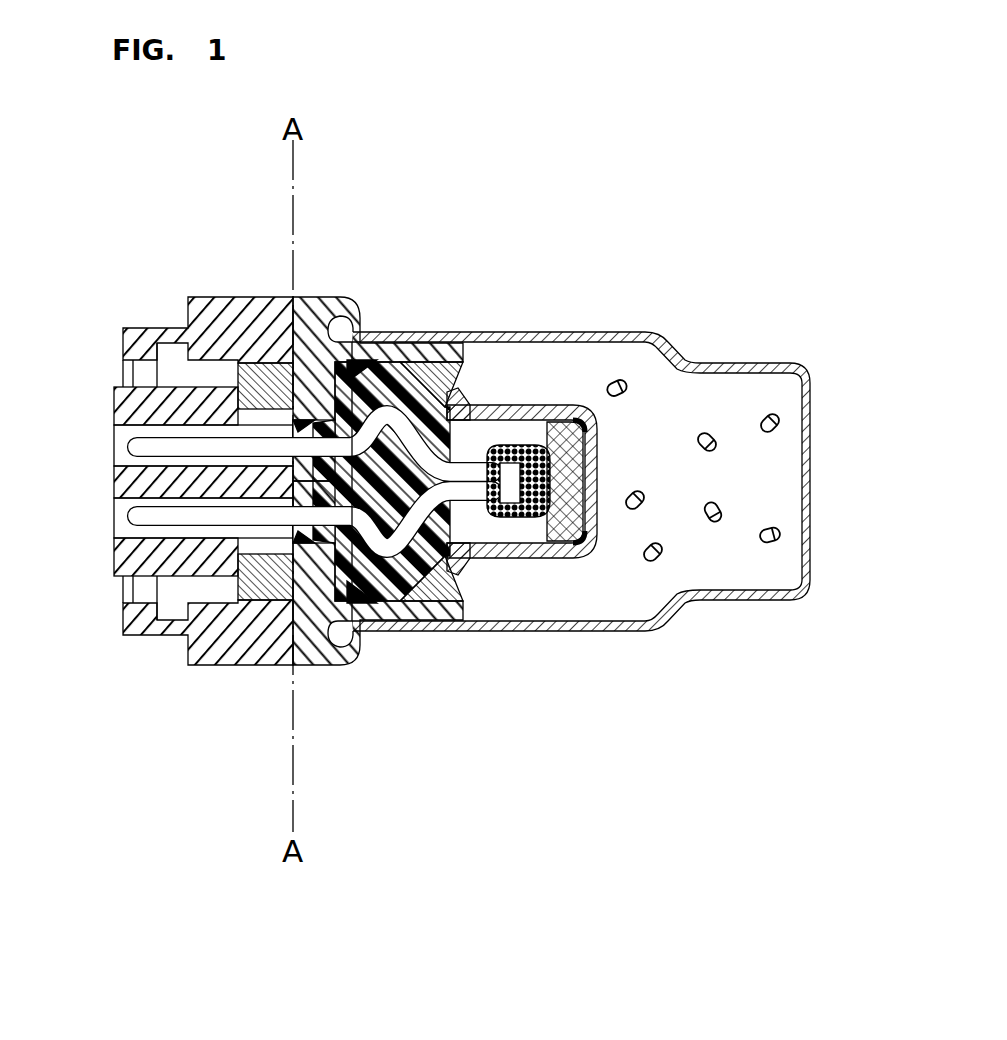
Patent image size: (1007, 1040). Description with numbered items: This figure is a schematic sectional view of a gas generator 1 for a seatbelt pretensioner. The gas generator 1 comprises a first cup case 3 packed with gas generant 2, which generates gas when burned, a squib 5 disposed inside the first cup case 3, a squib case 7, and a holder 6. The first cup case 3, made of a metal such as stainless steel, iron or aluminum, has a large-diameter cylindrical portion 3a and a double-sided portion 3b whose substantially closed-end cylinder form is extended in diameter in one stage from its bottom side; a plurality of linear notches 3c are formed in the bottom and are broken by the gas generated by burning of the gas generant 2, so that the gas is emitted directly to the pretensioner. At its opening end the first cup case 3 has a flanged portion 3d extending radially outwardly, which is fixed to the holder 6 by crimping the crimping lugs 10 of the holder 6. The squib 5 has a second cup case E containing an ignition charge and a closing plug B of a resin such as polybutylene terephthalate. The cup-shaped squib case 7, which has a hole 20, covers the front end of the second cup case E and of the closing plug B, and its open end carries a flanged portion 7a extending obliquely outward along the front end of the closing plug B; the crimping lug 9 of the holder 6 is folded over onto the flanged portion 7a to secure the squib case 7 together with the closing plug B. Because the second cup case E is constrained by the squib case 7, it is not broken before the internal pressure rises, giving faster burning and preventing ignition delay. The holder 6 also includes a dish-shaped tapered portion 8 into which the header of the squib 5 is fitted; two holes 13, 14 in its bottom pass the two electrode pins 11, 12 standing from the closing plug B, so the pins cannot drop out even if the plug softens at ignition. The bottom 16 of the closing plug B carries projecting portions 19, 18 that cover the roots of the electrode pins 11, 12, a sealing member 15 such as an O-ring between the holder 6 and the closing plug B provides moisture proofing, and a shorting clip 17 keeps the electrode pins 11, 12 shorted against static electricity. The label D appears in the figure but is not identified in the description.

The gas generator 1 is at (745, 302).
The gas generant 2 is at (778, 412).
The first cup case 3 is at (510, 333).
The large-diameter cylindrical portion 3a is at (610, 333).
The double-sided portion 3b is at (758, 603).
The linear notches 3c is at (813, 425).
The flanged portion 3d is at (355, 667).
The squib 5 is at (573, 566).
The holder 6 is at (282, 303).
The squib case 7 is at (550, 405).
The flanged portion 7a is at (457, 575).
The tapered portion 8 is at (357, 325).
The crimping lug 9 is at (463, 345).
The crimping lug 10 is at (352, 333).
The electrode pin 11 is at (137, 447).
The electrode pin 12 is at (137, 513).
The hole 13 is at (247, 300).
The hole 14 is at (267, 603).
The sealing member 15 is at (383, 617).
The bottom of closing plug 16 is at (322, 640).
The shorting clip 17 is at (113, 393).
The projecting portion 18 is at (240, 541).
The projecting portion 19 is at (140, 438).
The hole 20 is at (597, 500).
The closing plug B is at (390, 340).
The region D is at (597, 440).
The second cup case E is at (519, 545).